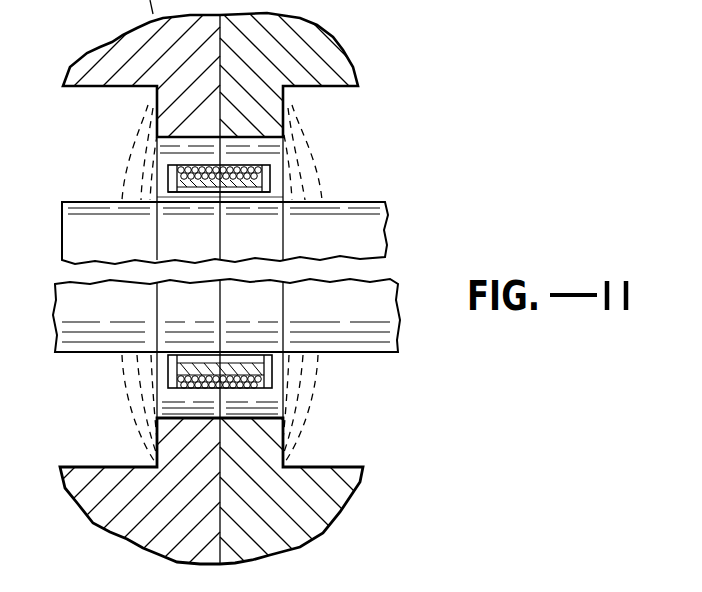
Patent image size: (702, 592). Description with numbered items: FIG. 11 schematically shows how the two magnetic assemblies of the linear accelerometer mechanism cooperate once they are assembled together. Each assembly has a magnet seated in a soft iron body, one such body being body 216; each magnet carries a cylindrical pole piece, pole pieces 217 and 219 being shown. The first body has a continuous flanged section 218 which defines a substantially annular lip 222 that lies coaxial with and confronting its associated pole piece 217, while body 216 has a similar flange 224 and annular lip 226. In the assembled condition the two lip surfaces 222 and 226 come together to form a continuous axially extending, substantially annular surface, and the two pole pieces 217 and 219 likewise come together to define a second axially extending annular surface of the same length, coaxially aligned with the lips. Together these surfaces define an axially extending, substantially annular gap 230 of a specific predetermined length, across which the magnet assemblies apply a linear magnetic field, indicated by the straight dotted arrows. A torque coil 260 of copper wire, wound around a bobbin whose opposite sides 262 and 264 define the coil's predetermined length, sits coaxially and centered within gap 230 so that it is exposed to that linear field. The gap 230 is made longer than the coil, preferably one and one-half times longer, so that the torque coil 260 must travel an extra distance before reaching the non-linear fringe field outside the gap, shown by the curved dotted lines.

The soft iron body 216 is at (338, 36).
The cylindrical pole piece 217 is at (160, 196).
The continuous flanged section 218 is at (157, 109).
The cylindrical pole piece 219 is at (283, 196).
The annular lip 222 is at (157, 146).
The flange 224 is at (283, 117).
The annular lip 226 is at (283, 150).
The axially extending gap 230 is at (193, 165).
The torque coil 260 is at (236, 165).
The side of bobbin 262 is at (168, 170).
The side of bobbin 264 is at (270, 170).